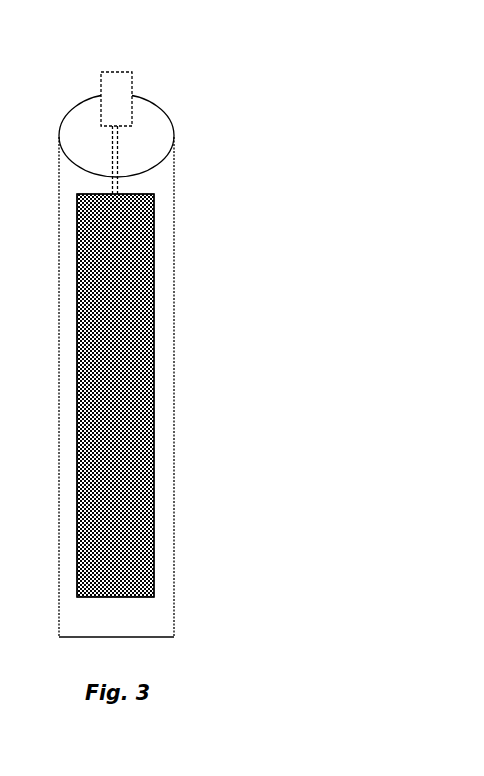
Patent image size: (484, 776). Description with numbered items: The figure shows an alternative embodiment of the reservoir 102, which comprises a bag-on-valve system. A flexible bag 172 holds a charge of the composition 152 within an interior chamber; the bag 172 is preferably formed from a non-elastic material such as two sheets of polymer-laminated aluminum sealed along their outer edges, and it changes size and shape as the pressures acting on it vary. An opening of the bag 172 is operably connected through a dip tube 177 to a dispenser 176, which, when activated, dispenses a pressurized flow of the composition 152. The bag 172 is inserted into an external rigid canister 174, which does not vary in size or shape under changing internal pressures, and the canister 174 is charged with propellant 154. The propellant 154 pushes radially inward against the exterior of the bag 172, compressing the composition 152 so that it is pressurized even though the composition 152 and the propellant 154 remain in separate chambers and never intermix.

The reservoir 102 is at (132, 44).
The dispenser 176 is at (115, 89).
The dip tube 177 is at (118, 162).
The external rigid canister 174 is at (175, 233).
The propellant 154 is at (162, 302).
The flexible bag 172 is at (154, 435).
The composition 152 is at (103, 582).